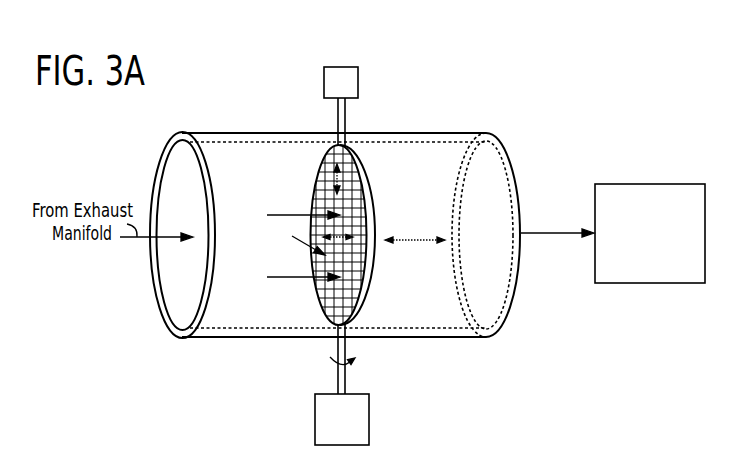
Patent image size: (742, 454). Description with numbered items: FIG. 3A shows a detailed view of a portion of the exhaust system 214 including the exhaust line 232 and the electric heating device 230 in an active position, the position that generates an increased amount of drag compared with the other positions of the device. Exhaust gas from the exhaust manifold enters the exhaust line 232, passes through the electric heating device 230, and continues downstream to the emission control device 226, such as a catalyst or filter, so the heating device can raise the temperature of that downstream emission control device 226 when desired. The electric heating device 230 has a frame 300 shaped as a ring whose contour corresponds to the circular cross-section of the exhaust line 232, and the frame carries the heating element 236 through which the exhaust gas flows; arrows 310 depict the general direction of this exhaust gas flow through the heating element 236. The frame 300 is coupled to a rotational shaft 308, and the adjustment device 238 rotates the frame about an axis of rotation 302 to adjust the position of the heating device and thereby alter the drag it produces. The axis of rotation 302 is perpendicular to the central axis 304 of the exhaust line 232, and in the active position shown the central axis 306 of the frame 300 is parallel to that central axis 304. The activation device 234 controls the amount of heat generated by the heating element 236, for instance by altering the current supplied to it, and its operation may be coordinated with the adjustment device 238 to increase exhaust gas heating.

The exhaust system 214 is at (545, 101).
The emission control device 226 is at (670, 184).
The electric heating device 230 is at (385, 146).
The exhaust line 232 is at (453, 135).
The activation device 234 is at (358, 85).
The heating element 236 is at (302, 235).
The adjustment device 238 is at (369, 425).
The frame 300 is at (367, 171).
The axis of rotation 302 is at (329, 172).
The central axis of the exhaust line 304 is at (432, 238).
The central axis of the frame 306 is at (358, 256).
The rotational shaft 308 is at (347, 382).
The arrows 310 is at (267, 215).